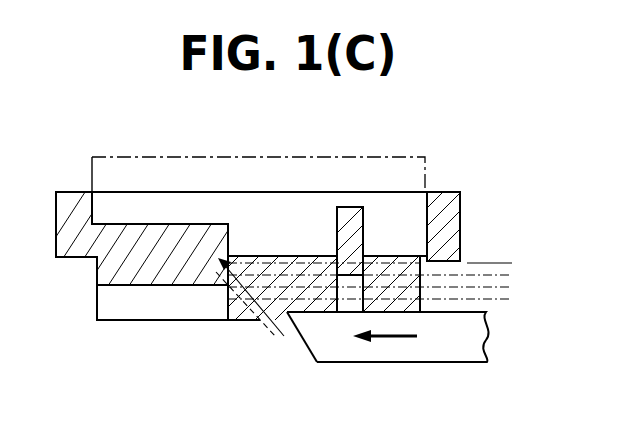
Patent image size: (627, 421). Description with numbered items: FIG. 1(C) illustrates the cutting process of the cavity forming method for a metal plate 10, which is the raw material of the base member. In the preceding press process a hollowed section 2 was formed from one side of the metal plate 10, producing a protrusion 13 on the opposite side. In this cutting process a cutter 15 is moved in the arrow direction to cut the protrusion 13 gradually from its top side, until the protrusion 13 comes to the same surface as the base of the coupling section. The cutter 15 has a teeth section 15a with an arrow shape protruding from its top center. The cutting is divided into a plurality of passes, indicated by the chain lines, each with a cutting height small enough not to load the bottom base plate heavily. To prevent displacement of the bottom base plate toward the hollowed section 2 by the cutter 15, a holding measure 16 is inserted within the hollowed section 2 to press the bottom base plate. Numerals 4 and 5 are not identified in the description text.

The hollowed section 2 is at (417, 222).
The projection 4 is at (347, 212).
The cavity 5 is at (131, 218).
The metal plate 10 is at (63, 210).
The protrusion 13 is at (113, 303).
The cutter 15 is at (472, 341).
The teeth section 15a is at (306, 353).
The holding measure 16 is at (181, 178).